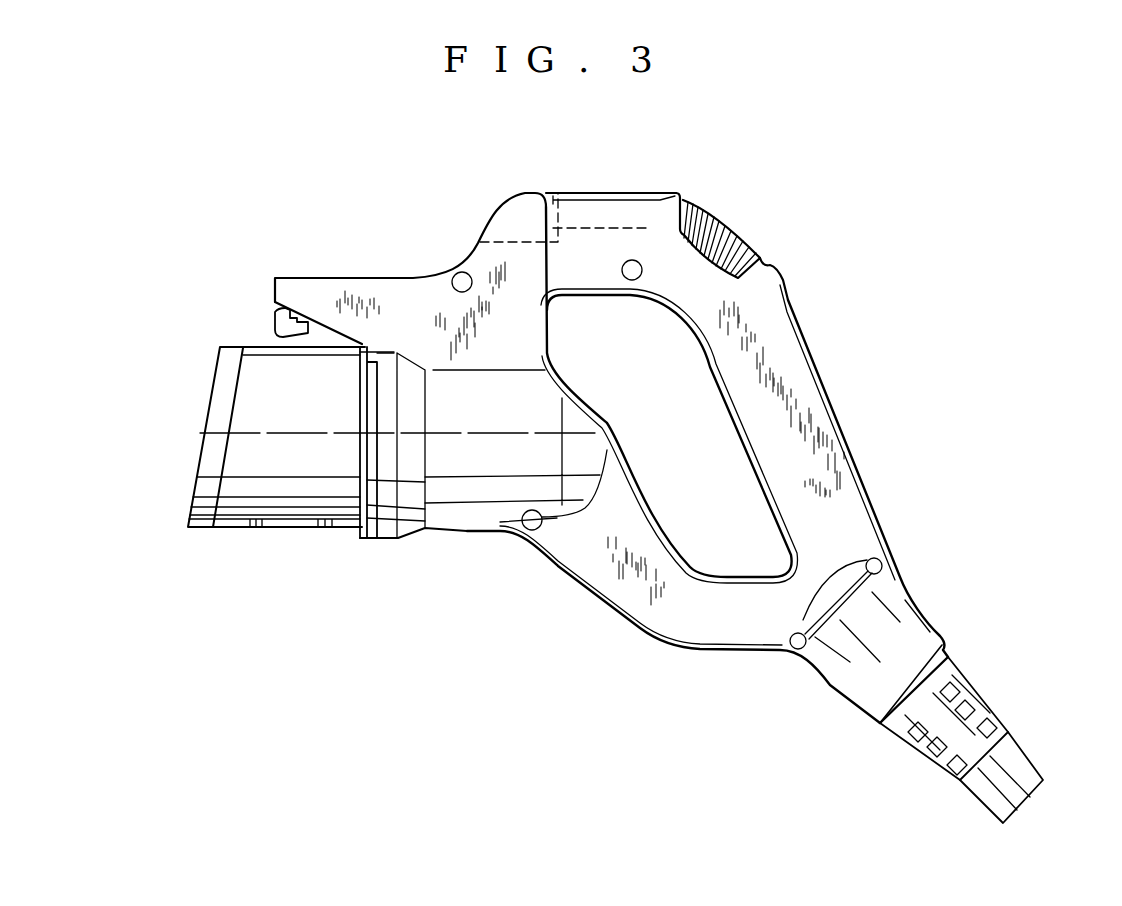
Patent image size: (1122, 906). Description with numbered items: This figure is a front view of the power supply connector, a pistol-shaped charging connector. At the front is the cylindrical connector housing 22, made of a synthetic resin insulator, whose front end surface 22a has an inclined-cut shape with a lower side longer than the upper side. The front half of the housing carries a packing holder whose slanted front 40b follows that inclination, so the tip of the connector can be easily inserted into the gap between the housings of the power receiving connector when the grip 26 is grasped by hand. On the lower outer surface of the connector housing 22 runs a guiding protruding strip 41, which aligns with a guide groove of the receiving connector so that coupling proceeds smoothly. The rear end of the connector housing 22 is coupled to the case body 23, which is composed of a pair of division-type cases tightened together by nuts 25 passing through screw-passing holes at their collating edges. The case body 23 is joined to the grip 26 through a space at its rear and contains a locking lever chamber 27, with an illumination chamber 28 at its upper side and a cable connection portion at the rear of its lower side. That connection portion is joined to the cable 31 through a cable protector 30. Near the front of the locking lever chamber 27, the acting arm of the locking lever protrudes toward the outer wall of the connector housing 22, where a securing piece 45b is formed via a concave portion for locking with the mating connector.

The connector housing 22 is at (303, 530).
The front end surface 22a is at (213, 493).
The case body 23 is at (600, 600).
The nuts 25 is at (630, 281).
The grip 26 is at (813, 407).
The locking lever chamber 27 is at (643, 192).
The illumination chamber 28 is at (505, 226).
The cable protector 30 is at (987, 697).
The cable 31 is at (1020, 770).
The front of the packing holder 40b is at (200, 458).
The guiding protruding strip 41 is at (247, 528).
The securing piece 45b is at (275, 325).